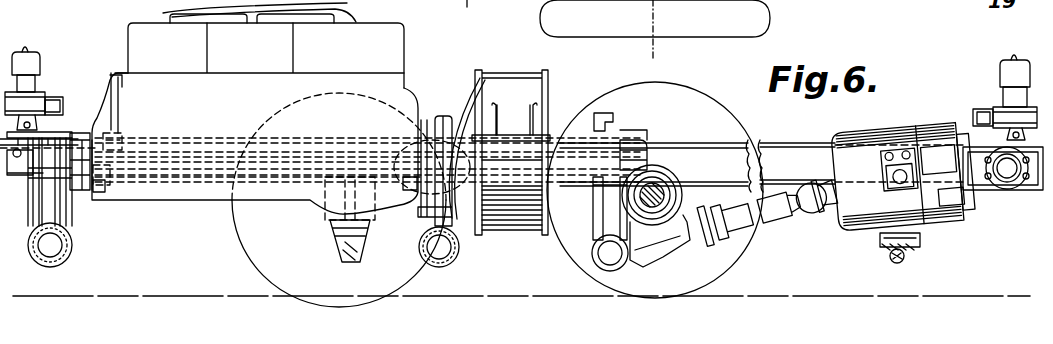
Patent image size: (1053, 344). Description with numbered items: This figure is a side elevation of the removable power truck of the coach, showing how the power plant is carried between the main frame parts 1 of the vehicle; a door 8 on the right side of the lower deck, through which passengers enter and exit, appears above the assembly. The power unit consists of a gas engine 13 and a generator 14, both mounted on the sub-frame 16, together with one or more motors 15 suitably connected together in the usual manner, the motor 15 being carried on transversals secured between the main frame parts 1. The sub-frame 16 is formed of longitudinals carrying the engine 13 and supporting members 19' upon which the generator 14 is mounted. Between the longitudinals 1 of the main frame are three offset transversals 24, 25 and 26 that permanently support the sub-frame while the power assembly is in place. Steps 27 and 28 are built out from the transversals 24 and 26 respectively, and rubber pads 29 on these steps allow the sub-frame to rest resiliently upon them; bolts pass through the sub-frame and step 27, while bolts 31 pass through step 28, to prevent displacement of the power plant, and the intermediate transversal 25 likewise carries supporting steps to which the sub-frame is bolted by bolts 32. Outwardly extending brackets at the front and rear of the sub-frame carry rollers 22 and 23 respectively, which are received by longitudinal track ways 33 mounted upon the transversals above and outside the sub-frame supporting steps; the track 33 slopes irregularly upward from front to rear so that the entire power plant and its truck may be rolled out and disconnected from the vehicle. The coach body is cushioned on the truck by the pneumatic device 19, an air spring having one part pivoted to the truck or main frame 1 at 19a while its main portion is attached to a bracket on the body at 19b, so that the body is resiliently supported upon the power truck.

The main frame parts 1 is at (777, 153).
The door 8 is at (642, 45).
The gas engine 13 is at (269, 155).
The generator 14 is at (500, 87).
The motors 15 is at (897, 143).
The sub-frame 16 is at (637, 147).
The pneumatic device 19 is at (521, 83).
The pivot of pneumatic device 19a is at (37, 128).
The bracket attachment of pneumatic device 19b is at (60, 100).
The supporting members 19' is at (447, 148).
The roller 22 is at (613, 118).
The roller 23 is at (122, 137).
The transversal 24 is at (610, 253).
The intermediate transversal 25 is at (452, 264).
The transversal 26 is at (65, 257).
The step 27 is at (645, 262).
The step 28 is at (77, 190).
The rubber pads 29 is at (110, 175).
The bolts 31 is at (107, 189).
The bolts 32 is at (413, 183).
The longitudinal track ways 33 is at (200, 159).